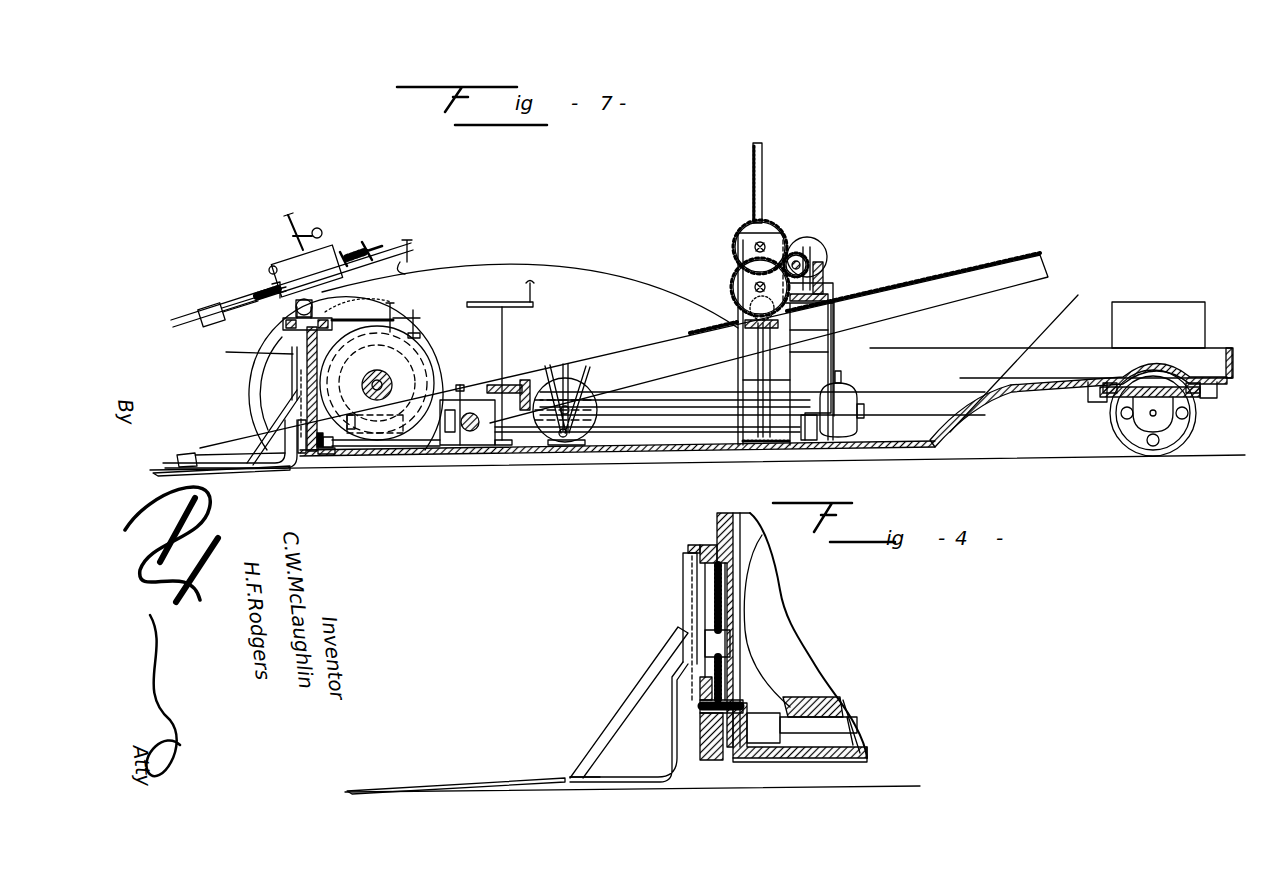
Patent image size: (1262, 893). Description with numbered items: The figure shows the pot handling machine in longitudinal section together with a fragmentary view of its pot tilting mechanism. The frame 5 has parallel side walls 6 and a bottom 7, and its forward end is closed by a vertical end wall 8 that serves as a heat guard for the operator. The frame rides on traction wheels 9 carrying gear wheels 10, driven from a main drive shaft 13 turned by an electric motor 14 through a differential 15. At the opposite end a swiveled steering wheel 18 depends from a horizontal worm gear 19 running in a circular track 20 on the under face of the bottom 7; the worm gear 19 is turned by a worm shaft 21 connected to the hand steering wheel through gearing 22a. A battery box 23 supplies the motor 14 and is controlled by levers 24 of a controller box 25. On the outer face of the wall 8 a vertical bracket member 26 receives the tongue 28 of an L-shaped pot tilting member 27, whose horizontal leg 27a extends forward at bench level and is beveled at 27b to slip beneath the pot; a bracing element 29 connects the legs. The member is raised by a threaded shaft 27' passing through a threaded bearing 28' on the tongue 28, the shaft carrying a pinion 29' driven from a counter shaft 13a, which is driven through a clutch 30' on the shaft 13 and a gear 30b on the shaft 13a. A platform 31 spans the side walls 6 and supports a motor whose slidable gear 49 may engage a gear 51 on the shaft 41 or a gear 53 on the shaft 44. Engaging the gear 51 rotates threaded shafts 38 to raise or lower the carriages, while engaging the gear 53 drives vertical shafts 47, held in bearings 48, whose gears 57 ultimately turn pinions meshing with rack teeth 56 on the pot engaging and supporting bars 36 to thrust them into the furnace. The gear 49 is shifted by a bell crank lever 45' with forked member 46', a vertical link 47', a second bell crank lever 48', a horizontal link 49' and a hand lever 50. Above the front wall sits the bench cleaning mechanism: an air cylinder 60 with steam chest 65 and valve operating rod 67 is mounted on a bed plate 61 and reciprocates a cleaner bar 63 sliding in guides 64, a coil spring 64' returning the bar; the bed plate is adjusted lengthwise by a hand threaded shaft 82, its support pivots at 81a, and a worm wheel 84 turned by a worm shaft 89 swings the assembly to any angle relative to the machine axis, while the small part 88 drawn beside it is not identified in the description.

In FIG. 7, the frame 5 is at (910, 442).
In FIG. 7, the side walls 6 is at (597, 290).
In FIG. 4, the side walls 6 is at (748, 522).
In FIG. 7, the bottom 7 is at (622, 452).
In FIG. 7, the vertical end wall 8 is at (306, 378).
In FIG. 7, the traction wheels 9 is at (247, 377).
In FIG. 7, the gear wheels 10 is at (470, 410).
In FIG. 7, the main drive shaft 13 is at (717, 413).
In FIG. 7, the counter shaft 13a is at (418, 447).
In FIG. 4, the counter shaft 13a is at (843, 722).
In FIG. 7, the electric motor 14 is at (842, 420).
In FIG. 7, the differential 15 is at (398, 368).
In FIG. 4, the differential 15 is at (772, 628).
In FIG. 7, the swiveled steering wheel 18 is at (1173, 437).
In FIG. 7, the worm gear 19 is at (1122, 396).
In FIG. 7, the circular track 20 is at (1221, 392).
In FIG. 7, the worm shaft 21 is at (1025, 351).
In FIG. 7, the gearing 22a is at (522, 378).
In FIG. 7, the box 23 is at (1147, 313).
In FIG. 7, the levers 24 is at (583, 383).
In FIG. 7, the controller box 25 is at (553, 430).
In FIG. 7, the bracket member 26 is at (242, 348).
In FIG. 4, the bracket member 26 is at (700, 730).
In FIG. 7, the pot tilting member 27 is at (230, 468).
In FIG. 4, the pot tilting member 27 is at (629, 746).
In FIG. 4, the threaded shaft 27' is at (677, 632).
In FIG. 7, the horizontal leg 27a is at (230, 463).
In FIG. 7, the beveled end 27b is at (175, 472).
In FIG. 4, the beveled end 27b is at (545, 790).
In FIG. 7, the vertical tongue 28 is at (256, 411).
In FIG. 4, the vertical tongue 28 is at (637, 657).
In FIG. 4, the interiorly threaded bearing 28' is at (742, 626).
In FIG. 7, the bracing element 29 is at (257, 427).
In FIG. 4, the bracing element 29 is at (629, 702).
In FIG. 4, the pinion 29' is at (750, 682).
In FIG. 7, the clutch 30' is at (467, 448).
In FIG. 7, the gear 30b is at (488, 448).
In FIG. 7, the platform 31 is at (822, 312).
In FIG. 7, the pot engaging and supporting bars 36 is at (1004, 280).
In FIG. 7, the threaded shafts 38 is at (763, 190).
In FIG. 7, the shaft 41 is at (810, 250).
In FIG. 7, the shaft 44 is at (741, 306).
In FIG. 7, the bell crank lever 45' is at (842, 277).
In FIG. 7, the forked member 46' is at (879, 270).
In FIG. 7, the vertical shafts 47 is at (831, 368).
In FIG. 7, the link 47' is at (868, 322).
In FIG. 7, the bearings 48 is at (867, 345).
In FIG. 7, the second bell crank lever 48' is at (827, 395).
In FIG. 7, the sliding gear 49 is at (875, 246).
In FIG. 7, the horizontal link 49' is at (748, 460).
In FIG. 7, the hand lever 50 is at (583, 367).
In FIG. 7, the gear 51 is at (780, 240).
In FIG. 7, the gear 53 is at (750, 278).
In FIG. 7, the rack teeth 56 is at (706, 330).
In FIG. 7, the gears 57 is at (812, 340).
In FIG. 7, the air cylinder 60 is at (335, 230).
In FIG. 7, the bed plate 61 is at (370, 246).
In FIG. 7, the cleaner bar 63 is at (176, 324).
In FIG. 7, the bearings or guides 64 is at (239, 282).
In FIG. 7, the expansible coil spring 64' is at (251, 257).
In FIG. 7, the steam chest 65 is at (318, 236).
In FIG. 7, the operating rod 67 is at (273, 266).
In FIG. 7, the pivot 81a is at (340, 312).
In FIG. 7, the hand operated threaded shaft 82 is at (808, 262).
In FIG. 7, the worm wheel 84 is at (299, 327).
In FIG. 7, the pin 88 is at (392, 306).
In FIG. 7, the worm shaft 89 is at (418, 331).